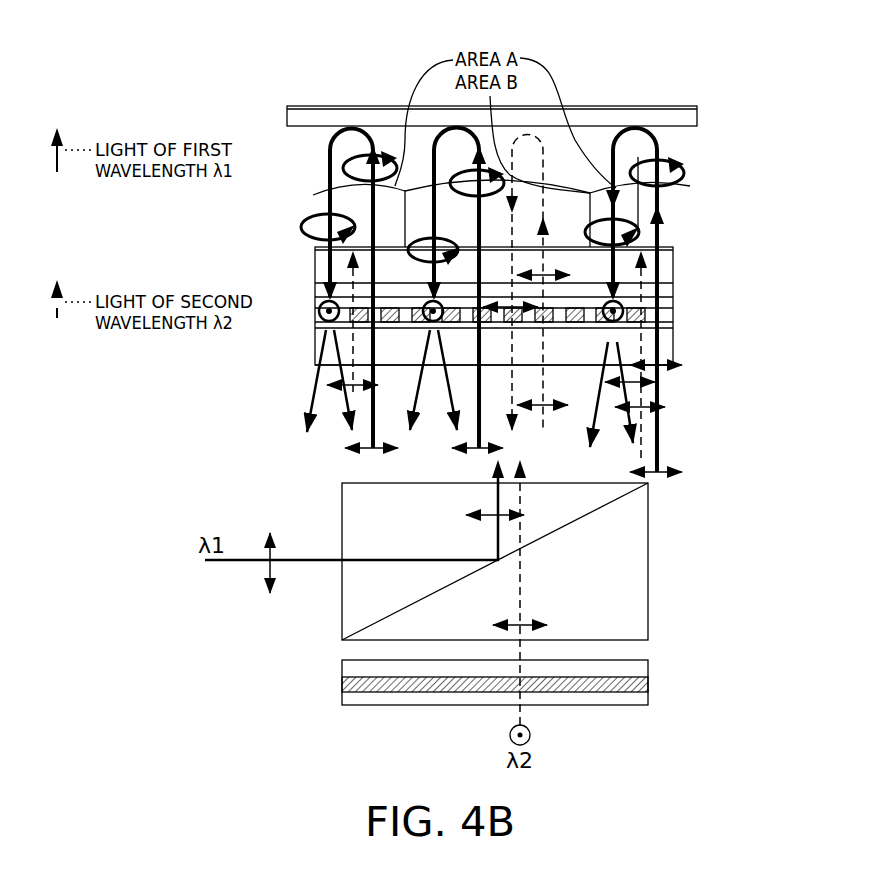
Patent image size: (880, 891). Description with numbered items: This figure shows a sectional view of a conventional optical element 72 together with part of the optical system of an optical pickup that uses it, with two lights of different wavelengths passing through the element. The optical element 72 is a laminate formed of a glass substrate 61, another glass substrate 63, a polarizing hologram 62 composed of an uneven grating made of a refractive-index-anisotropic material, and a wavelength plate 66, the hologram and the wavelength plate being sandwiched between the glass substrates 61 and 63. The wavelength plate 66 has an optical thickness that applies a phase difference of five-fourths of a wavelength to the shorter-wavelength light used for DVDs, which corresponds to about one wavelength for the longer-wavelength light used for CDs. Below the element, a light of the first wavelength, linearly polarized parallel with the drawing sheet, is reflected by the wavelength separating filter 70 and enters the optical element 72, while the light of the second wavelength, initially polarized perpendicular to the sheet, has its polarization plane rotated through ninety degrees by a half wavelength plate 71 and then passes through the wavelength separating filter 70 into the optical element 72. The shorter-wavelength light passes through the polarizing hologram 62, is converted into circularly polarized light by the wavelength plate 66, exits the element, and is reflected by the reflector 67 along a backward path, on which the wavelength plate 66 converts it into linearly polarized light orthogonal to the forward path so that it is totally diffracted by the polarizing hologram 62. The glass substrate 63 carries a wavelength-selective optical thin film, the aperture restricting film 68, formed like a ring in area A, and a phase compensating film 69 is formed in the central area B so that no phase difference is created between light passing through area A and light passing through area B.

The glass substrate 61 is at (528, 364).
The polarizing hologram 62 is at (683, 298).
The glass substrate 63 is at (667, 272).
The wavelength plate 66 is at (667, 292).
The reflector 67 is at (698, 118).
The aperture restricting film 68 is at (673, 247).
The phase compensating film 69 is at (567, 246).
The wavelength separating filter 70 is at (600, 510).
The half wavelength plate 71 is at (650, 685).
The optical element 72 is at (556, 298).